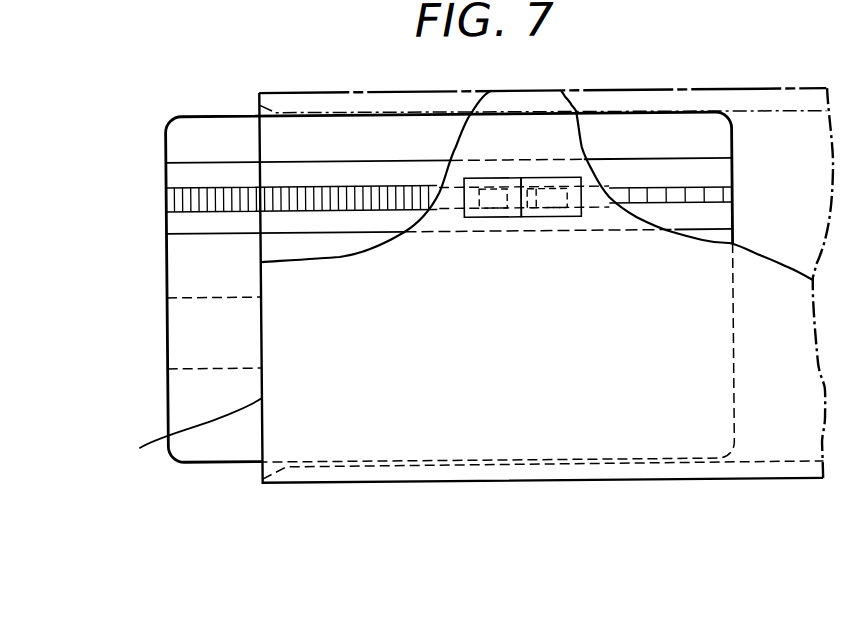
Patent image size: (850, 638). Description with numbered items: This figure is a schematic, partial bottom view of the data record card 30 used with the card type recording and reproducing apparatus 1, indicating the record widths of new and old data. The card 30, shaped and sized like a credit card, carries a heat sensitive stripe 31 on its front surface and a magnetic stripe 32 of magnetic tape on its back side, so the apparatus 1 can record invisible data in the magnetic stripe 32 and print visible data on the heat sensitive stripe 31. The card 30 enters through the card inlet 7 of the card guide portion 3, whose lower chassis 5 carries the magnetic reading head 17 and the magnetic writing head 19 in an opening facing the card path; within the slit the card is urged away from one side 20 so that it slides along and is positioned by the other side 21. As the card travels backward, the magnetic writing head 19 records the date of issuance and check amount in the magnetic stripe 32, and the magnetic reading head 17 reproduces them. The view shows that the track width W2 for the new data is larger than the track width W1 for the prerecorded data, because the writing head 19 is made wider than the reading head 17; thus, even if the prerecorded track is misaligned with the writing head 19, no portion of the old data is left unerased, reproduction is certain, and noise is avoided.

The card type recording and reproducing apparatus 1 is at (573, 62).
The card guide portion 3 is at (616, 481).
The lower chassis 5 is at (518, 443).
The card inlet 7 is at (190, 432).
The magnetic reading head 17 is at (495, 205).
The magnetic writing head 19 is at (555, 205).
The one side of the slit 20 is at (738, 461).
The other side of the slit 21 is at (744, 111).
The data record card 30 is at (211, 461).
The heat sensitive stripe 31 is at (183, 332).
The magnetic stripe 32 is at (221, 166).
The track width for the prerecorded data W1 is at (733, 189).
The track width for the new data W2 is at (167, 209).